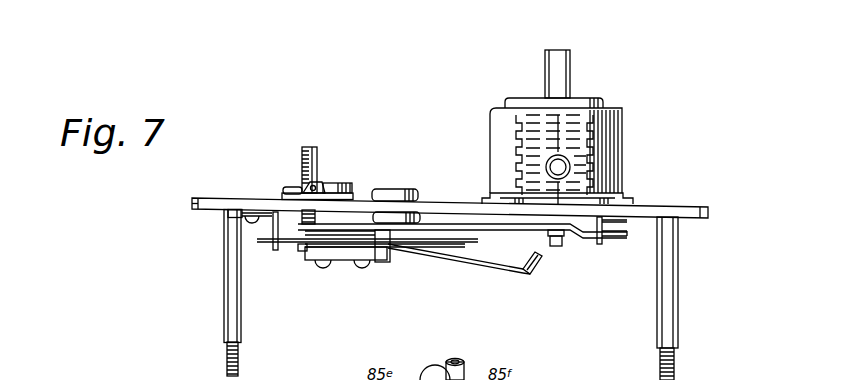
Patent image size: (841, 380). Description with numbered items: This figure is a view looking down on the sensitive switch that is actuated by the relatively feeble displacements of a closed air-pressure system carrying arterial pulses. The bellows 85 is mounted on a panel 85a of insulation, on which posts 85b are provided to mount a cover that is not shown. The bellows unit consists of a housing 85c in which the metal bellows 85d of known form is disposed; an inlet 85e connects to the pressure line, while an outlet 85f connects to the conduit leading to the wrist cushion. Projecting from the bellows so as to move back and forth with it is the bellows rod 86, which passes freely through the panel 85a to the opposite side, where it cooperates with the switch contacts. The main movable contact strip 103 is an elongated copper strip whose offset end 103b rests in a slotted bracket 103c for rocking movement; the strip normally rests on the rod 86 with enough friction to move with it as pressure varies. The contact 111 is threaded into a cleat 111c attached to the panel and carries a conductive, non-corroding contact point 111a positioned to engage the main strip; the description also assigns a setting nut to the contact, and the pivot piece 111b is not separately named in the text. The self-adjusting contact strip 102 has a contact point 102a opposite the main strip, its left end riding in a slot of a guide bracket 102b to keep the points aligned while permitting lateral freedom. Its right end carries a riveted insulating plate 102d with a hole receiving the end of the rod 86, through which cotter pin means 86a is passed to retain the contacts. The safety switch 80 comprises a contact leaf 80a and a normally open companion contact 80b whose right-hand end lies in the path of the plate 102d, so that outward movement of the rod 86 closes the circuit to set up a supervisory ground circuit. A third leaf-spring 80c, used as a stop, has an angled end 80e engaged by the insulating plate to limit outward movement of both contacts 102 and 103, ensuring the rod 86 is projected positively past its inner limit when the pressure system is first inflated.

The safety switch 80 is at (441, 273).
The contact spring or leaf 80a is at (449, 261).
The normally open companion contact 80b is at (484, 244).
The third leaf-spring 80c is at (521, 275).
The angled end 80e is at (540, 268).
The bellows 85 is at (574, 126).
The panel 85a is at (692, 207).
The posts 85b is at (224, 327).
The housing 85c is at (588, 101).
The metal bellows 85d is at (623, 142).
The inlet 85e is at (571, 61).
The outlet 85f is at (572, 161).
The bellows rod 86 is at (556, 248).
The cotter pin means 86a is at (562, 243).
The contact strip 102 is at (296, 247).
The contact point 102a is at (305, 256).
The guide bracket 102b is at (277, 251).
The insulating plate 102d is at (481, 241).
The contact strip 103 is at (349, 228).
The offset end 103b is at (608, 238).
The slotted bracket 103c is at (601, 246).
The contact 111 is at (316, 152).
The contact point 111a is at (297, 223).
The pivot bracket 111b is at (312, 186).
The cleat 111c is at (291, 192).